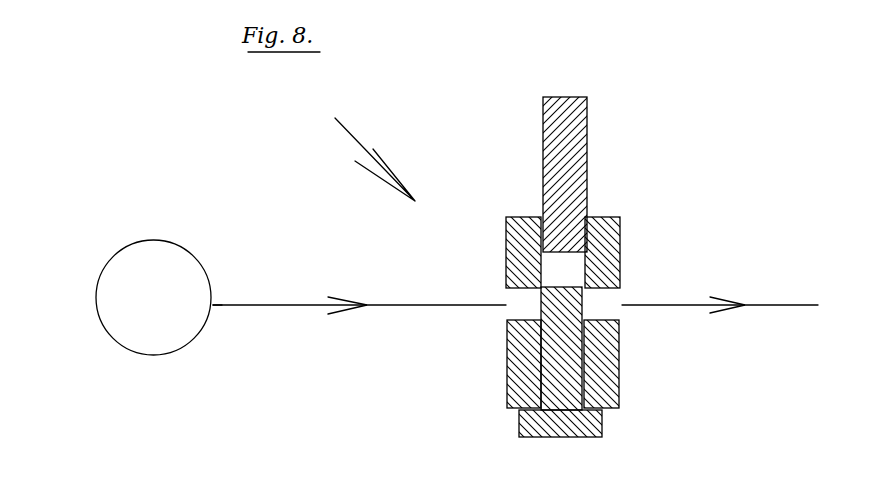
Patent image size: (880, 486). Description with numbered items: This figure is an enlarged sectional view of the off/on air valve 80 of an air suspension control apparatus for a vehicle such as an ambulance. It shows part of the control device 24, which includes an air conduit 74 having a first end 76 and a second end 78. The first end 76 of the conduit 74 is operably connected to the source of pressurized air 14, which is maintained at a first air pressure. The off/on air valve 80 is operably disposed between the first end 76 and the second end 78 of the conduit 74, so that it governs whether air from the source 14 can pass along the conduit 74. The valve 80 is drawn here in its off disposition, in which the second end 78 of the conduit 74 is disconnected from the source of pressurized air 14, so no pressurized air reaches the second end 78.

The source of pressurized air 14 is at (117, 288).
The control device 24 is at (363, 149).
The air conduit 74 is at (291, 302).
The first end 76 is at (218, 307).
The second end 78 is at (817, 308).
The off/on air valve 80 is at (610, 232).